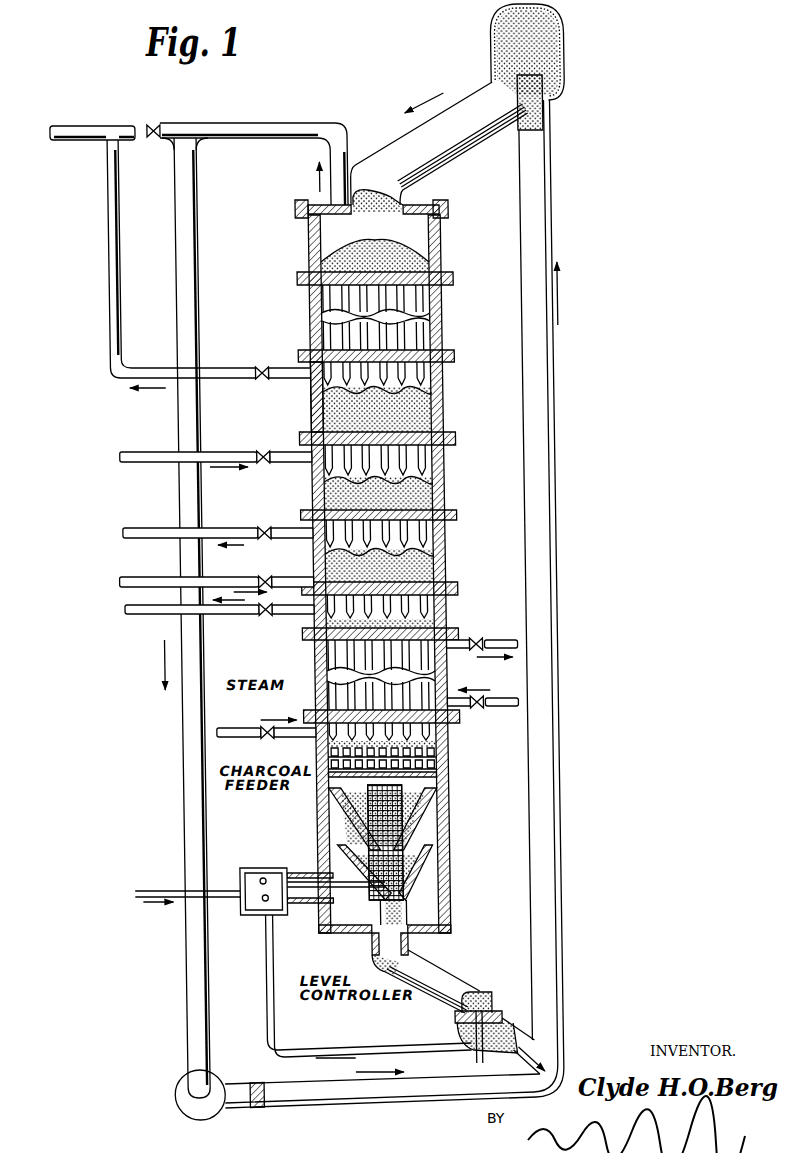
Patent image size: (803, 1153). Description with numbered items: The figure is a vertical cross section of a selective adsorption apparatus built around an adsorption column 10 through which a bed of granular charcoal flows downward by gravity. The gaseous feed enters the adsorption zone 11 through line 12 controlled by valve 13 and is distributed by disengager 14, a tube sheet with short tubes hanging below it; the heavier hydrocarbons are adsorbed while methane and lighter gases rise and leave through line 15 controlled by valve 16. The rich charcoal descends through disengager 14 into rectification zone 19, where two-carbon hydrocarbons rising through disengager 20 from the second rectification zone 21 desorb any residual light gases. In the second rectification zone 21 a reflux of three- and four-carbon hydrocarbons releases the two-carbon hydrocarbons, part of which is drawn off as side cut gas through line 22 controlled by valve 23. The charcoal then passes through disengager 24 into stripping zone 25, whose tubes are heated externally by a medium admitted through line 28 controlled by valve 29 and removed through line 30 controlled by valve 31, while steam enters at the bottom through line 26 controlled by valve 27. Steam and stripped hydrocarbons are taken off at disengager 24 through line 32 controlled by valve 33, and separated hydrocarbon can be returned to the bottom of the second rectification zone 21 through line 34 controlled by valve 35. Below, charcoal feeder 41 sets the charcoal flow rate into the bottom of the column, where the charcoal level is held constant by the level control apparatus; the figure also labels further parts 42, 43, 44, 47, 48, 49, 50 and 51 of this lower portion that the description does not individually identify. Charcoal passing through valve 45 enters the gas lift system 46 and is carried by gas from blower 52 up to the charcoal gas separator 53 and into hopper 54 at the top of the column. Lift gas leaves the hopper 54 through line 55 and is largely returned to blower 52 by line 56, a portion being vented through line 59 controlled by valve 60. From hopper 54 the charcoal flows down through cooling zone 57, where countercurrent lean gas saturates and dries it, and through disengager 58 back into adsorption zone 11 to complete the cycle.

The adsorption column 10 is at (452, 237).
The adsorption zone 11 is at (303, 415).
The line 12 is at (231, 452).
The valve 13 is at (261, 463).
The disengager 14 is at (449, 439).
The line 15 is at (218, 368).
The valve 16 is at (261, 379).
The rectification zone 19 is at (448, 464).
The disengager 20 is at (449, 476).
The second rectification zone 21 is at (449, 556).
The line 22 is at (233, 528).
The valve 23 is at (259, 528).
The disengager 24 is at (452, 590).
The stripping zone 25 is at (303, 680).
The line 26 is at (238, 728).
The valve 27 is at (259, 739).
The line 28 is at (492, 708).
The valve 29 is at (464, 709).
The line 30 is at (490, 640).
The valve 31 is at (465, 640).
The line 32 is at (226, 614).
The valve 33 is at (259, 615).
The line 34 is at (235, 577).
The valve 35 is at (262, 577).
The charcoal feeder 41 is at (439, 775).
The support cone 42 is at (416, 838).
The funnel discharge neck 43 is at (395, 906).
The suspension rod 44 is at (311, 900).
The valve 45 is at (458, 1050).
The gas lift system 46 is at (256, 909).
The discharge tube 47 is at (436, 970).
The gas lift pipe 48 is at (549, 251).
The air line 49 is at (143, 888).
The air line to valve 50 is at (348, 986).
The suspended funnel 51 is at (436, 842).
The blower 52 is at (170, 1105).
The charcoal gas separator 53 is at (491, 38).
The hopper 54 is at (313, 259).
The line 55 is at (288, 123).
The line 56 is at (170, 762).
The cooling zone 57 is at (445, 313).
The disengager 58 is at (446, 352).
The line 59 is at (80, 140).
The valve 60 is at (147, 129).